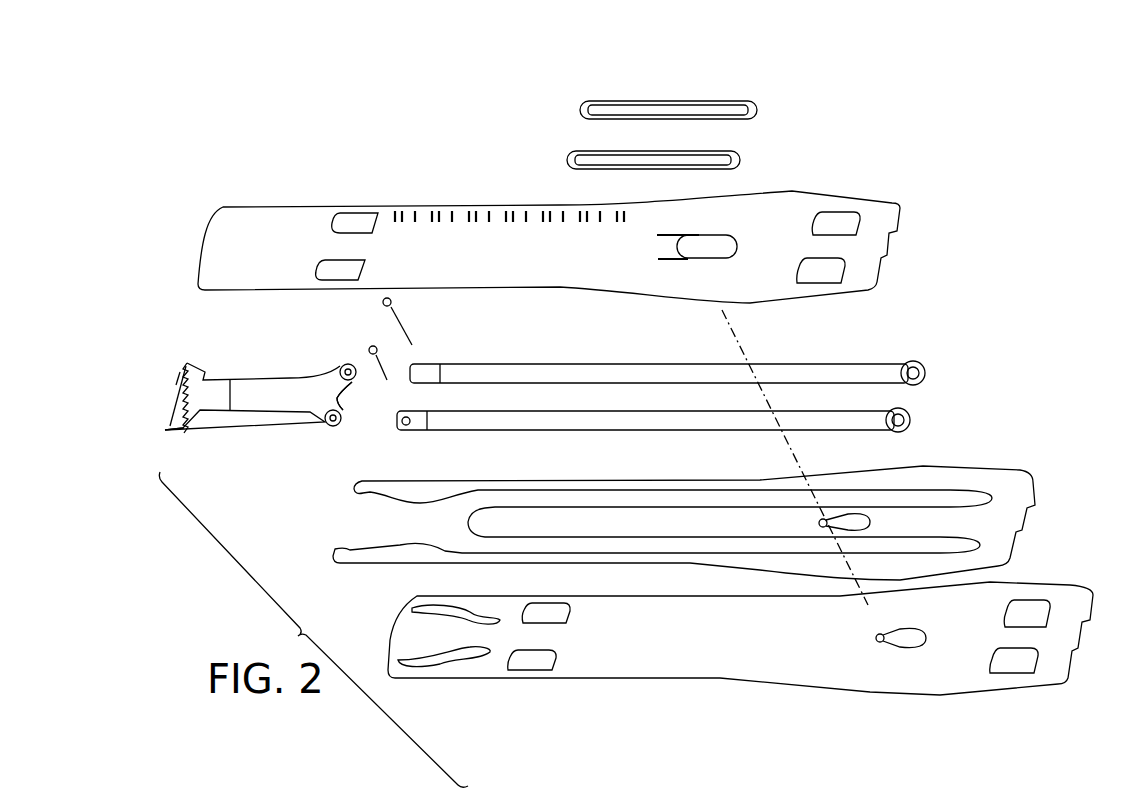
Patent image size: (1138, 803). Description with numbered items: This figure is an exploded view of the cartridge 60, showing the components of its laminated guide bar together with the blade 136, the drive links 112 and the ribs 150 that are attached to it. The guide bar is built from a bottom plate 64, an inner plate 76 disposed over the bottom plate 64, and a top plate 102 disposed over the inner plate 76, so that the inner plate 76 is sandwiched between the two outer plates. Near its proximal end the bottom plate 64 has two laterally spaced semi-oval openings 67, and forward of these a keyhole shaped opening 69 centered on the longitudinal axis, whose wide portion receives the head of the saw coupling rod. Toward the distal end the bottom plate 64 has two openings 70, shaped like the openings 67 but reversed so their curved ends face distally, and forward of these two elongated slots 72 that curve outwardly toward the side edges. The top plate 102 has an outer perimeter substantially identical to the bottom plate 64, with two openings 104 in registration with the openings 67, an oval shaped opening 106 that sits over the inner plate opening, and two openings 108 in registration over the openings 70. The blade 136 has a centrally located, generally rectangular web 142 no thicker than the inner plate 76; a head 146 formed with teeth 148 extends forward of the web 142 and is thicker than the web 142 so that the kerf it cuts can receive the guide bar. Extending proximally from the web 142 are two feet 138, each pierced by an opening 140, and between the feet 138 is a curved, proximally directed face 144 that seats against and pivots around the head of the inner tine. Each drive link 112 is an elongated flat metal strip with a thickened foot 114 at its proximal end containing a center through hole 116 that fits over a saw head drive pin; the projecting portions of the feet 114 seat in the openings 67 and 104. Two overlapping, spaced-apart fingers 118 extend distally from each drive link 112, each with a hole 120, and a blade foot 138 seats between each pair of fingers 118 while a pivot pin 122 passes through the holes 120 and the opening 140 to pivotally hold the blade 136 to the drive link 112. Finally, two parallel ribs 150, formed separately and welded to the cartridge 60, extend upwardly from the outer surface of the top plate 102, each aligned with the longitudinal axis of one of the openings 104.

The cartridge 60 is at (952, 150).
The bottom plate 64 is at (757, 644).
The openings 67 is at (1035, 612).
The keyhole shaped opening 69 is at (920, 642).
The openings 70 is at (545, 660).
The elongated slots 72 is at (420, 612).
The inner plate 76 is at (1032, 478).
The top plate 102 is at (460, 269).
The openings 104 is at (830, 270).
The oval shaped opening 106 is at (705, 243).
The openings 108 is at (345, 210).
The drive links 112 is at (560, 364).
The foot 114 is at (922, 364).
The through hole 116 is at (910, 414).
The fingers 118 is at (412, 418).
The hole 120 is at (423, 368).
The pivot pin 122 is at (392, 302).
The blade 136 is at (172, 358).
The feet 138 is at (341, 366).
The opening 140 is at (328, 426).
The web 142 is at (228, 400).
The proximally directed face 144 is at (360, 395).
The head 146 is at (170, 428).
The teeth 148 is at (167, 408).
The ribs 150 is at (720, 101).